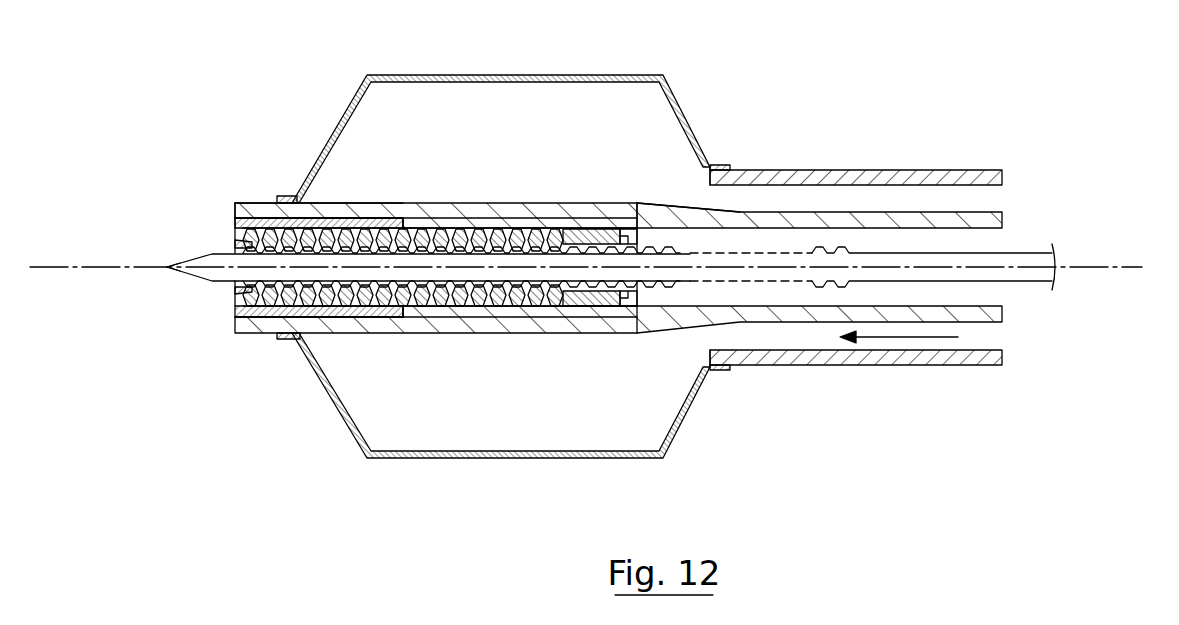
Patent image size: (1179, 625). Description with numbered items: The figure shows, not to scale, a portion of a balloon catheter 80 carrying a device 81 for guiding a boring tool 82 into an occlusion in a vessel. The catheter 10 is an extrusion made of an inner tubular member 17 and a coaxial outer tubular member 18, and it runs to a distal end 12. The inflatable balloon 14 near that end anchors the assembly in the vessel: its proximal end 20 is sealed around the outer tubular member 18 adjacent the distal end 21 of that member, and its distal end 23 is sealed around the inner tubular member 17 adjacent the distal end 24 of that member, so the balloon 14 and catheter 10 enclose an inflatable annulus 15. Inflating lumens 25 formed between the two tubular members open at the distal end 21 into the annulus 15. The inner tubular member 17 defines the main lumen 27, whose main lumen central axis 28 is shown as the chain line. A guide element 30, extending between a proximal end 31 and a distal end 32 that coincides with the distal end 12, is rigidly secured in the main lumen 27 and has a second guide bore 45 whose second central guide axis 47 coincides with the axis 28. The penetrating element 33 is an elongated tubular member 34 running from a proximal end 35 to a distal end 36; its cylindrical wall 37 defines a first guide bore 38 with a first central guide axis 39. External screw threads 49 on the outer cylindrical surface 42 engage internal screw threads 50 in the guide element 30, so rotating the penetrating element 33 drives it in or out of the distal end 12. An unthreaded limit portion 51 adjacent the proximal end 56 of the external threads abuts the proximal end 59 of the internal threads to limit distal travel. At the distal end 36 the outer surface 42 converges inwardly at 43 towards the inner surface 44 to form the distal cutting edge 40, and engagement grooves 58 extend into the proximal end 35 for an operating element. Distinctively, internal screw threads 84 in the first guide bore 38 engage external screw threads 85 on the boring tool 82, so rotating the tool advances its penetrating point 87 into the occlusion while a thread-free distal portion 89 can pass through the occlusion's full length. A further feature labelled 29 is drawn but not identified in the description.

The catheter 10 is at (837, 168).
The distal end 12 is at (234, 206).
The inflatable balloon 14 is at (448, 75).
The inflatable annulus 15 is at (540, 100).
The inner tubular member 17 is at (1002, 220).
The outer tubular member 18 is at (963, 170).
The proximal end of balloon 20 is at (720, 165).
The distal end of outer tubular member 21 is at (708, 178).
The distal end of balloon 23 is at (285, 196).
The distal end of inner tubular member 24 is at (256, 203).
The inflating lumens 25 is at (888, 197).
The main lumen 27 is at (802, 300).
The main lumen central axis 28 is at (1097, 267).
The seal 29 is at (392, 218).
The guide element 30 is at (343, 235).
The proximal end of guide element 31 is at (405, 228).
The distal end of guide element 32 is at (222, 206).
The penetrating element 33 is at (502, 305).
The tubular member 34 is at (530, 305).
The proximal end of penetrating element 35 is at (640, 235).
The distal end of penetrating element 36 is at (235, 246).
The cylindrical wall 37 is at (462, 303).
The first guide bore 38 is at (300, 336).
The first central guide axis 39 is at (100, 268).
The distal cutting edge 40 is at (234, 331).
The outer cylindrical surface 42 is at (421, 306).
The converging portion 43 is at (254, 306).
The inner surface 44 is at (234, 284).
The second guide bore 45 is at (233, 238).
The second central guide axis 47 is at (133, 265).
The external screw threads 49 is at (487, 233).
The internal screw threads 50 is at (235, 296).
The unthreaded limit portion 51 is at (580, 235).
The proximal end of external screw threads 56 is at (563, 303).
The engagement grooves 58 is at (623, 238).
The proximal end of internal screw threads 59 is at (406, 310).
The balloon catheter 80 is at (724, 85).
The device 81 is at (300, 415).
The boring tool 82 is at (312, 238).
The internal screw threads 84 is at (468, 250).
The external screw threads 85 is at (597, 250).
The penetrating point 87 is at (166, 268).
The distal portion 89 is at (370, 250).